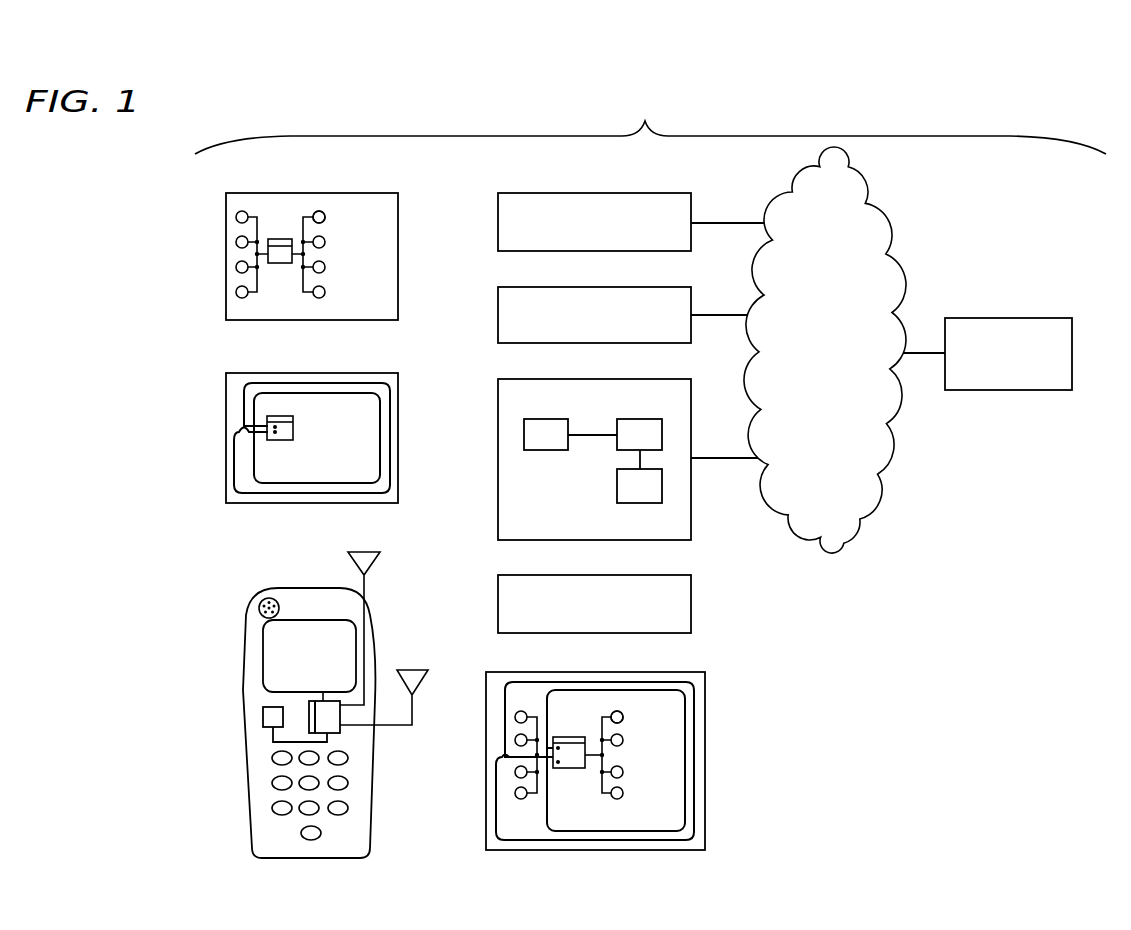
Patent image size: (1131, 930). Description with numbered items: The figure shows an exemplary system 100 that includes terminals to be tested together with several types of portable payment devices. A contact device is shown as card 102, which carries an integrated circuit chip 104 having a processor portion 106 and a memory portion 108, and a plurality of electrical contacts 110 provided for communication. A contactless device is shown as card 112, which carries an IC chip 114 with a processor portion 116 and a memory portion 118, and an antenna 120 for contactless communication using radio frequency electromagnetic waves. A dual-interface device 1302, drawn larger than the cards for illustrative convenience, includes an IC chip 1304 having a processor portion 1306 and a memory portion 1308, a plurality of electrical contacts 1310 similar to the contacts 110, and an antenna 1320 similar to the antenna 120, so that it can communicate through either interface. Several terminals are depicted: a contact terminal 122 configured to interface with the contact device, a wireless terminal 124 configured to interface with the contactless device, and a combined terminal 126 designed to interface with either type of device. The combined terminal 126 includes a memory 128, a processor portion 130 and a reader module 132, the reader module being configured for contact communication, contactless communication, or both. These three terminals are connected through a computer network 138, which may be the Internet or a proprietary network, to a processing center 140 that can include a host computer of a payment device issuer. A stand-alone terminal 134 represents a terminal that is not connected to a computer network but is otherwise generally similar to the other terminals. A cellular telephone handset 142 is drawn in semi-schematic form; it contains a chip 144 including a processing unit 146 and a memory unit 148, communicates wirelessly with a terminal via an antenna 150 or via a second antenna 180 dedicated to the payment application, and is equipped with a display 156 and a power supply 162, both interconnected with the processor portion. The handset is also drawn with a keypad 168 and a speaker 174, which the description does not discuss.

The system 100 is at (650, 122).
The card 102 is at (278, 322).
The integrated circuit (IC) chip 104 is at (272, 263).
The processor portion 106 is at (284, 263).
The memory portion 108 is at (278, 239).
The electrical contacts 110 is at (325, 217).
The card 112 is at (290, 503).
The IC chip 114 is at (280, 440).
The processor portion 116 is at (288, 433).
The memory portion 118 is at (293, 420).
The antenna 120 is at (340, 381).
The contact terminal 122 is at (635, 193).
The wireless terminal 124 is at (635, 287).
The combined terminal 126 is at (635, 379).
The memory 128 is at (630, 503).
The processor portion 130 is at (630, 419).
The reader module 132 is at (538, 419).
The stand-alone terminal 134 is at (635, 575).
The computer network 138 is at (893, 311).
The processing center 140 is at (1023, 318).
The cellular telephone handset 142 is at (376, 636).
The chip 144 is at (338, 731).
The processing unit 146 is at (332, 726).
The memory unit 148 is at (309, 703).
The antenna 150 is at (349, 557).
The display 156 is at (264, 652).
The power supply 162 is at (263, 715).
The keypad 168 is at (258, 797).
The speaker 174 is at (262, 600).
The second antenna 180 is at (408, 672).
The dual-interface device 1302 is at (705, 762).
The IC chip 1304 is at (560, 768).
The processor portion 1306 is at (577, 768).
The memory portion 1308 is at (568, 737).
The electrical contacts 1310 is at (623, 717).
The antenna 1320 is at (633, 682).